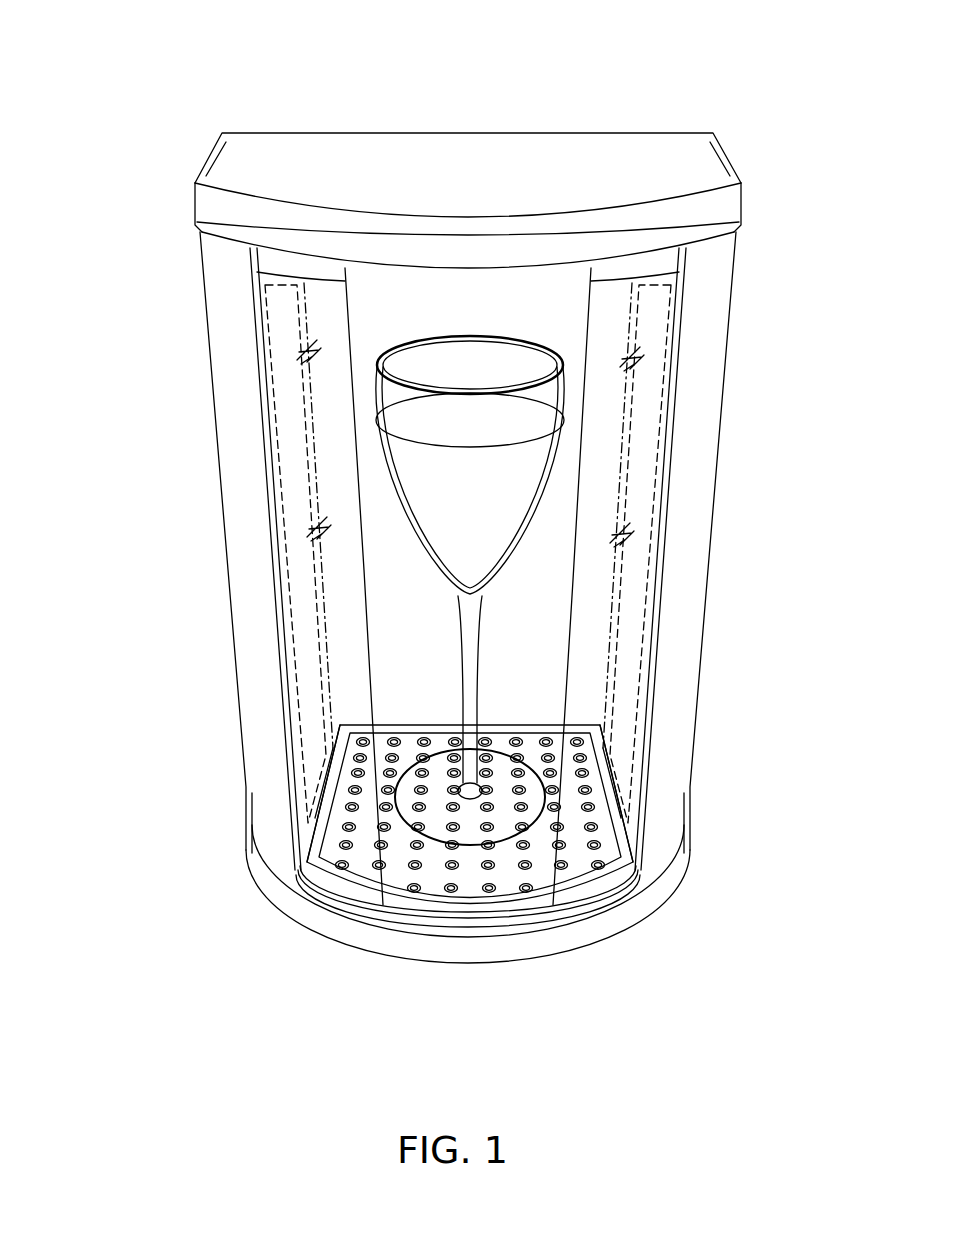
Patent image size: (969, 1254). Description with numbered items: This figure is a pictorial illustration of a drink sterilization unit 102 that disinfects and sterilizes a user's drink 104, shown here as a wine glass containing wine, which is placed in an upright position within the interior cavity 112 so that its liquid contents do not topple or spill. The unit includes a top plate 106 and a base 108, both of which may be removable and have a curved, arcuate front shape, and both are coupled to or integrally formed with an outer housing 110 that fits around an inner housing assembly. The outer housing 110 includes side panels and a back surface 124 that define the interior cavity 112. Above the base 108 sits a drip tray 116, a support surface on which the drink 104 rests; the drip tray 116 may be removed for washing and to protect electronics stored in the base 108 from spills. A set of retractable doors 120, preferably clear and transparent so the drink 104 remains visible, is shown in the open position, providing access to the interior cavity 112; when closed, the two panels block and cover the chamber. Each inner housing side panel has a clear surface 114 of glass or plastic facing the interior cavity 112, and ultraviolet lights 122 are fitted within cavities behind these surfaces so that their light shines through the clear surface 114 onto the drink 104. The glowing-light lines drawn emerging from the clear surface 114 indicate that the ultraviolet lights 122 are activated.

The drink sterilization unit 102 is at (178, 64).
The drink 104 is at (400, 806).
The top plate 106 is at (593, 165).
The base 108 is at (543, 940).
The outer housing 110 is at (705, 340).
The interior cavity 112 is at (352, 673).
The clear surface 114 is at (270, 345).
The drip tray 116 is at (565, 853).
The retractable doors 120 is at (390, 581).
The ultraviolet lights 122 is at (250, 300).
The back surface 124 is at (493, 309).